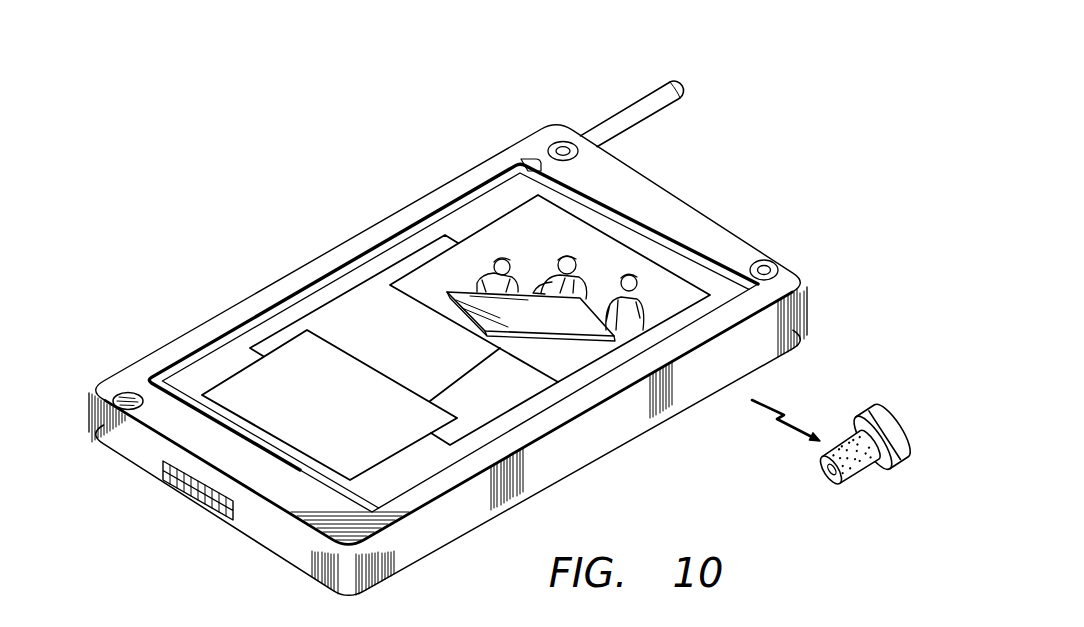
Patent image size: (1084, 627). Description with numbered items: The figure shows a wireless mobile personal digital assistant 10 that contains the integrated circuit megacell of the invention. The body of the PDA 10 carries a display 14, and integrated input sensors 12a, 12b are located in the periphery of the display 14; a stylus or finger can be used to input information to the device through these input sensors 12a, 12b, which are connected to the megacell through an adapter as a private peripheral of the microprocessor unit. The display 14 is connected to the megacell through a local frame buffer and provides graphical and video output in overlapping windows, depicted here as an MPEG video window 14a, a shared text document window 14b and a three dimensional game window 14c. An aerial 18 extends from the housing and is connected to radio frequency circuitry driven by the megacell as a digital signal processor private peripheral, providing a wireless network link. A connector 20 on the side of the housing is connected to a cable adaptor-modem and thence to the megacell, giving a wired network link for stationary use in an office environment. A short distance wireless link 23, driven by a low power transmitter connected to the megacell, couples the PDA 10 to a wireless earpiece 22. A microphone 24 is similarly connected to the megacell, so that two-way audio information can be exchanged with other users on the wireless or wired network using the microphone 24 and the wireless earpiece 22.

The mobile personal digital assistant 10 is at (689, 461).
The integrated input sensor 12a is at (400, 237).
The integrated input sensor 12b is at (671, 234).
The display 14 is at (183, 383).
The MPEG video window 14a is at (498, 235).
The shared text document window 14b is at (353, 297).
The three dimensional game window 14c is at (248, 378).
The aerial 18 is at (627, 113).
The connector 20 is at (173, 483).
The earpiece 22 is at (890, 430).
The short distance wireless link 23 is at (806, 407).
The microphone 24 is at (119, 396).